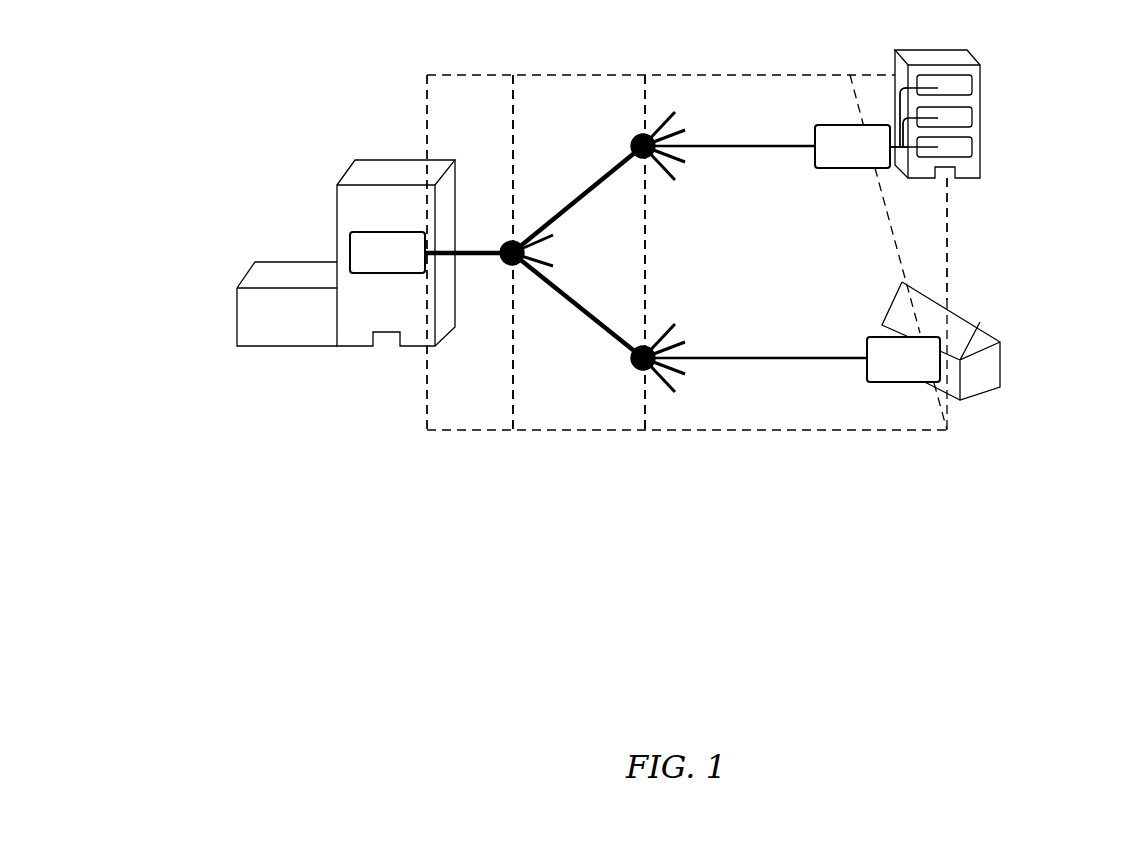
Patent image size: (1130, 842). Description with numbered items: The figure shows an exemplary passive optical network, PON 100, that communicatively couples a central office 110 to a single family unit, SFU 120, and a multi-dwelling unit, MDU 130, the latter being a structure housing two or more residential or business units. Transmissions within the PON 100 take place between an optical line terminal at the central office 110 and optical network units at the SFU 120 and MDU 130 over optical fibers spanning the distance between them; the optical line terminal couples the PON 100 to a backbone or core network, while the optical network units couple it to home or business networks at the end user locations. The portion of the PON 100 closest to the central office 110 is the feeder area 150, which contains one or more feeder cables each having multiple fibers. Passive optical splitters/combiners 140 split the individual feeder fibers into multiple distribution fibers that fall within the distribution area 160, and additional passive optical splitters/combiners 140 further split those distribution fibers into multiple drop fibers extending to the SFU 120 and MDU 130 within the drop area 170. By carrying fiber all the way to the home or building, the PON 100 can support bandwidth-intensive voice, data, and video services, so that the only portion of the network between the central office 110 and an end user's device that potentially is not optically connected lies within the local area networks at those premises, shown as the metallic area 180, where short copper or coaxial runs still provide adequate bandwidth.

The PON 100 is at (345, 643).
The central office 110 is at (308, 262).
The single family unit (SFU) 120 is at (983, 395).
The multi-dwelling unit (MDU) 130 is at (980, 112).
The passive optical splitters/combiners 140 is at (657, 183).
The feeder area 150 is at (487, 417).
The distribution area 160 is at (568, 417).
The drop area 170 is at (777, 417).
The metallic area 180 is at (923, 212).